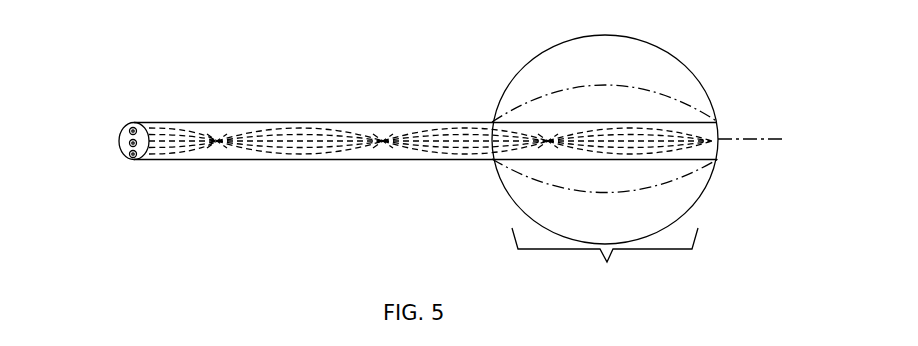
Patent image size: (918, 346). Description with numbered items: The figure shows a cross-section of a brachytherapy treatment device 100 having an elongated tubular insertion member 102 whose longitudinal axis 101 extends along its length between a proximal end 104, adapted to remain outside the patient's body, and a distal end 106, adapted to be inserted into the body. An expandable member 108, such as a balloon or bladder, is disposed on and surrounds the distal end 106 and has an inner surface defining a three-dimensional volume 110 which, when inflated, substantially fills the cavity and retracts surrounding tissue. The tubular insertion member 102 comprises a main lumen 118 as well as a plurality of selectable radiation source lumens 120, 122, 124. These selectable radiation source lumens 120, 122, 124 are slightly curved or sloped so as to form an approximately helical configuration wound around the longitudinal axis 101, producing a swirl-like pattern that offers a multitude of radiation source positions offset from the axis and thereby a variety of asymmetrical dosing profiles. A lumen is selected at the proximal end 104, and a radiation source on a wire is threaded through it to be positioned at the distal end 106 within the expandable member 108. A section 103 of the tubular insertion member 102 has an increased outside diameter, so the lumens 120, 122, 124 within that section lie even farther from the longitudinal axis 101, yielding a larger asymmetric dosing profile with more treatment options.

The brachytherapy treatment device 100 is at (217, 50).
The longitudinal axis 101 is at (730, 136).
The tubular insertion member 102 is at (358, 120).
The section 103 is at (605, 257).
The proximal end 104 is at (133, 106).
The distal end 106 is at (756, 172).
The expandable member 108 is at (655, 40).
The three-dimensional volume 110 is at (618, 70).
The main lumen 118 is at (387, 158).
The selectable radiation source lumen 120 is at (128, 128).
The selectable radiation source lumen 122 is at (130, 143).
The selectable radiation source lumen 124 is at (128, 157).